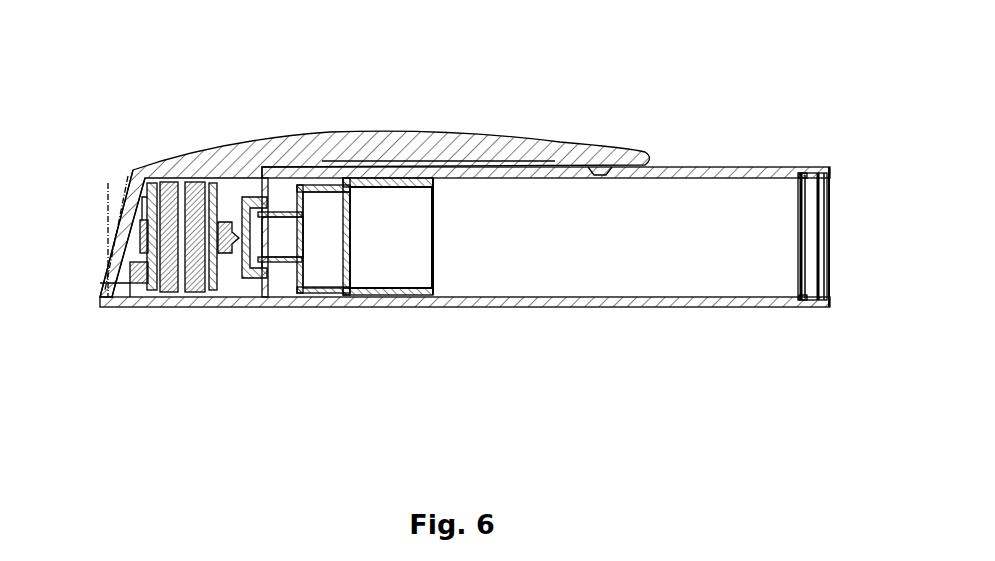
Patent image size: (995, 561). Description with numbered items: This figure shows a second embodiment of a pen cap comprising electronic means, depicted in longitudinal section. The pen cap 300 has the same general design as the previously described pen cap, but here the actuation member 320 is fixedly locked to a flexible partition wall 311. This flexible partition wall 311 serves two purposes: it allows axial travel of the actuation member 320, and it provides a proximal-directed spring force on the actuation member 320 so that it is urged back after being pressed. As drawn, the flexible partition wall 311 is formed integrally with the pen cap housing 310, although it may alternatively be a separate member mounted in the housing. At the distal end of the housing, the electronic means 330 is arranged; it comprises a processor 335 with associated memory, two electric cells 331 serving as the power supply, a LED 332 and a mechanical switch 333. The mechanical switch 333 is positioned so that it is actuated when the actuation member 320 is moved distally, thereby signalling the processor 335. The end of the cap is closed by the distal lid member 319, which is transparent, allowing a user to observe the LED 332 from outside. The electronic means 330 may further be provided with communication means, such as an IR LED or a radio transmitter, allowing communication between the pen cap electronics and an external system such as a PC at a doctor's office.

The pen cap 300 is at (748, 126).
The pen cap housing 310 is at (693, 298).
The flexible partition wall 311 is at (257, 202).
The distal lid member 319 is at (123, 200).
The actuation member 320 is at (427, 232).
The electronic means 330 is at (135, 160).
The electric cells 331 is at (172, 183).
The LED 332 is at (127, 265).
The mechanical switch 333 is at (224, 253).
The processor 335 is at (139, 234).